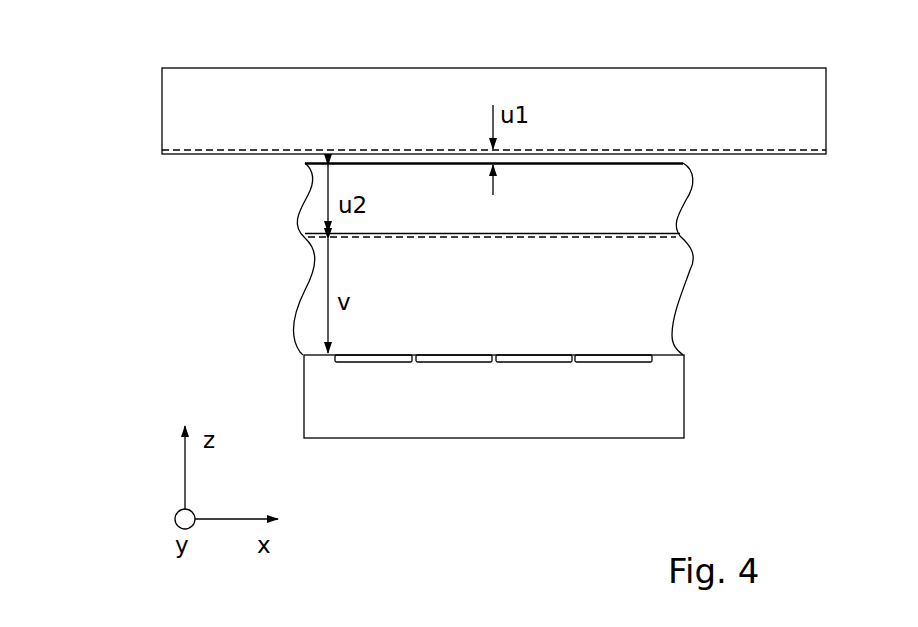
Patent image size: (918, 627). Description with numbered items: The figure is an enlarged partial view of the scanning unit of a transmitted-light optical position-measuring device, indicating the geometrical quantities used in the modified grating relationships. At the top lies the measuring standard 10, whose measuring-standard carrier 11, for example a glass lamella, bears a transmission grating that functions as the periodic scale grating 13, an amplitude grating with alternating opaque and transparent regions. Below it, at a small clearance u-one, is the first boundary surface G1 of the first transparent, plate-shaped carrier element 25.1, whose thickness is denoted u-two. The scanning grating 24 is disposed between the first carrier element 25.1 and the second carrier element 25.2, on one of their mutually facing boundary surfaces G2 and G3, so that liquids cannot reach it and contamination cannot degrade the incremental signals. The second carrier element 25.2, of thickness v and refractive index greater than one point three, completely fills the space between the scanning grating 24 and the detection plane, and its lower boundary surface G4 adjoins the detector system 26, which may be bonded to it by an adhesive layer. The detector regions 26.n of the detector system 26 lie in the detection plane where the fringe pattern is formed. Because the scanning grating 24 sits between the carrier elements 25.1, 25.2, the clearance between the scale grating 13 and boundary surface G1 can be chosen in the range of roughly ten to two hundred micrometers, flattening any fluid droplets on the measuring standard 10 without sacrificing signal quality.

The measuring standard 10 is at (151, 90).
The measuring-standard carrier 11 is at (730, 82).
The scale grating 13 is at (217, 155).
The scanning grating 24 is at (497, 259).
The first carrier element 25.1 is at (668, 205).
The second carrier element 25.2 is at (672, 298).
The detector system 26 is at (325, 404).
The detector regions 26.n is at (638, 361).
The first boundary surface G1 is at (651, 166).
The second boundary surface G2 is at (666, 232).
The third boundary surface G3 is at (650, 239).
The fourth boundary surface G4 is at (664, 354).